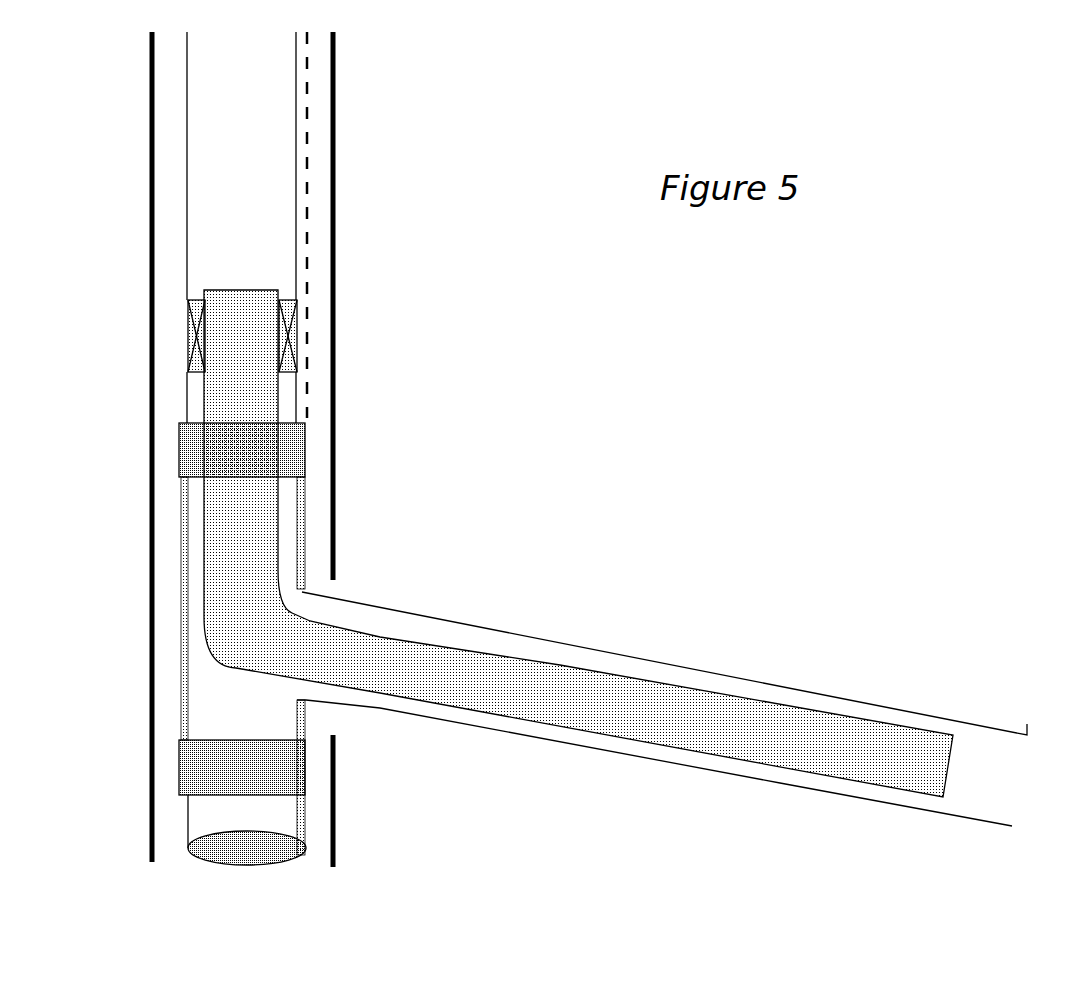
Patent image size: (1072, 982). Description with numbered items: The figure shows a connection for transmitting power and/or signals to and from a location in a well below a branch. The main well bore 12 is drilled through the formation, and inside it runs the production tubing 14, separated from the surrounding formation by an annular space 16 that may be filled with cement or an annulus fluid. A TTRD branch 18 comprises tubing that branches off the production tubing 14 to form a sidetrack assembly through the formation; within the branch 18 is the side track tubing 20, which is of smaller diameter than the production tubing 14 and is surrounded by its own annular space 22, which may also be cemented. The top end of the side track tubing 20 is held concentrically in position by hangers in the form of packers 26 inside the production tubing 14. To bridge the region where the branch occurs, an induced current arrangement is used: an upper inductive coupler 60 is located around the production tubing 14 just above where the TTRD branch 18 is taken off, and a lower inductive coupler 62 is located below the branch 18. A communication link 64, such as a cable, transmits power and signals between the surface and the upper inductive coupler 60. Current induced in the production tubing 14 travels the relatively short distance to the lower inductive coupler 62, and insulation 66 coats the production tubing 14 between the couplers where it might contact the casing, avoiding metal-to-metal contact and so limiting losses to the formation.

The main well bore 12 is at (158, 675).
The production tubing 14 is at (188, 256).
The annular space 16 is at (165, 557).
The TTRD branch 18 is at (712, 668).
The side track tubing 20 is at (745, 765).
The annular space 22 is at (552, 735).
The packers 26 is at (300, 330).
The upper inductive coupler 60 is at (178, 450).
The lower inductive coupler 62 is at (178, 770).
The communication link 64 is at (310, 163).
The insulation 66 is at (309, 575).